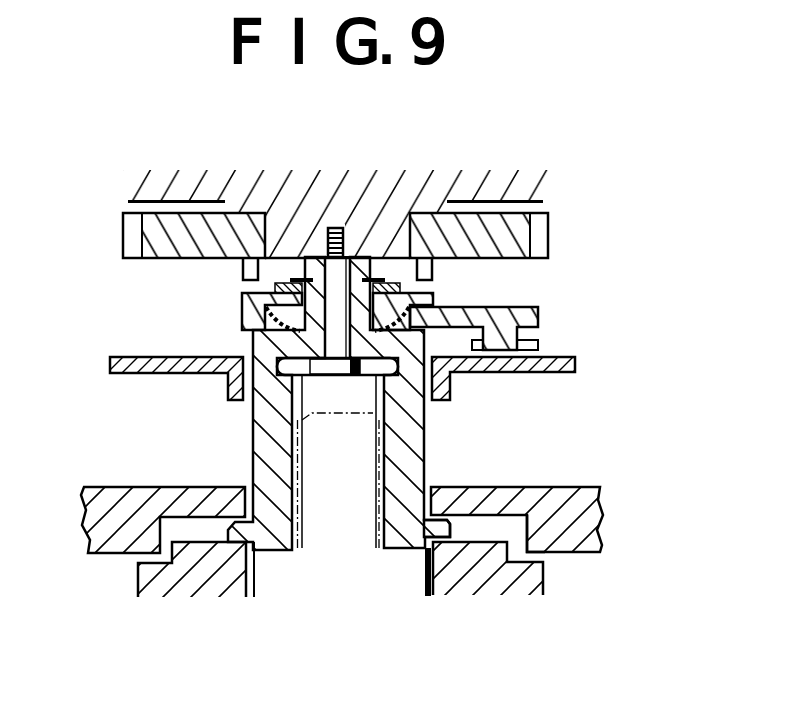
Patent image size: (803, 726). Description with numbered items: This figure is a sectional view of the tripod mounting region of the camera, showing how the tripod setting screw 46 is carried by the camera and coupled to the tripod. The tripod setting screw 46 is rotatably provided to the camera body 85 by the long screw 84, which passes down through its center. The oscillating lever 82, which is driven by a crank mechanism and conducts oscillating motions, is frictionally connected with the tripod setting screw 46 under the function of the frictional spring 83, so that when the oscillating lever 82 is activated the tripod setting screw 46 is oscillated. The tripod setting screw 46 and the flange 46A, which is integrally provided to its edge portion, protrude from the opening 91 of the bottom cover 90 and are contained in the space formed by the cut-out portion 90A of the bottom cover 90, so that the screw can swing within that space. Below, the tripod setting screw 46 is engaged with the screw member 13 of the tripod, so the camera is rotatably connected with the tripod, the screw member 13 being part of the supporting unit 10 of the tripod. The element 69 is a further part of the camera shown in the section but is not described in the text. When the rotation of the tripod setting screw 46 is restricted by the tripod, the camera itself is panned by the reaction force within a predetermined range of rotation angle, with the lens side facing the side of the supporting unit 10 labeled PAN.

The camera body 85 is at (195, 188).
The upper die block 69 is at (486, 222).
The frictional spring 83 is at (392, 300).
The oscillating lever 82 is at (540, 310).
The long screw 84 is at (345, 378).
The opening 91 is at (238, 473).
The tripod setting screw 46 is at (420, 445).
The flange 46A is at (455, 522).
The bottom cover 90 is at (603, 512).
The cut-out portion 90A is at (518, 530).
The screw member 13 is at (437, 583).
The supporting unit 10 is at (507, 583).